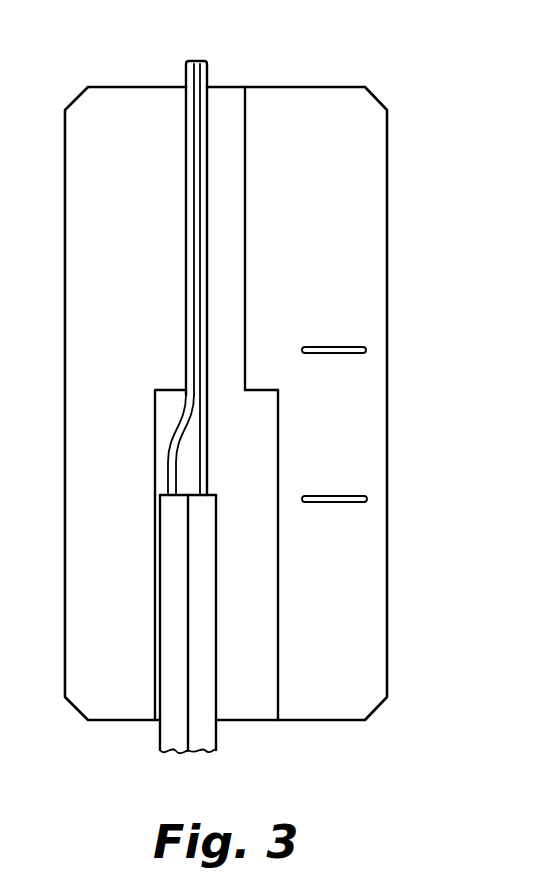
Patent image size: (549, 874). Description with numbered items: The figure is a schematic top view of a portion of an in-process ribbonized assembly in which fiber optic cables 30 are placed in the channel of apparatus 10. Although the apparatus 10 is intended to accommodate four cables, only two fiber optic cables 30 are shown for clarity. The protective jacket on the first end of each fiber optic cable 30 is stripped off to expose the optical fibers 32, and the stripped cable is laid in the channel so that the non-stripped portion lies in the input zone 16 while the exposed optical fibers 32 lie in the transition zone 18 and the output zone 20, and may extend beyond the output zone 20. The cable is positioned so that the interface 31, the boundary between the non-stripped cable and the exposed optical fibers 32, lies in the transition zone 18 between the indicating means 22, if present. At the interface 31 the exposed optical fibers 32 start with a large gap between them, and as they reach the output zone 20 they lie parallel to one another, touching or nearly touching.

The apparatus 10 is at (377, 59).
The input zone 16 is at (262, 660).
The transition zone 18 is at (262, 434).
The output zone 20 is at (233, 234).
The indicating means 22 is at (326, 349).
The fiber optic cable 30 is at (172, 740).
The interface 31 is at (214, 494).
The optical fibers 32 is at (168, 462).